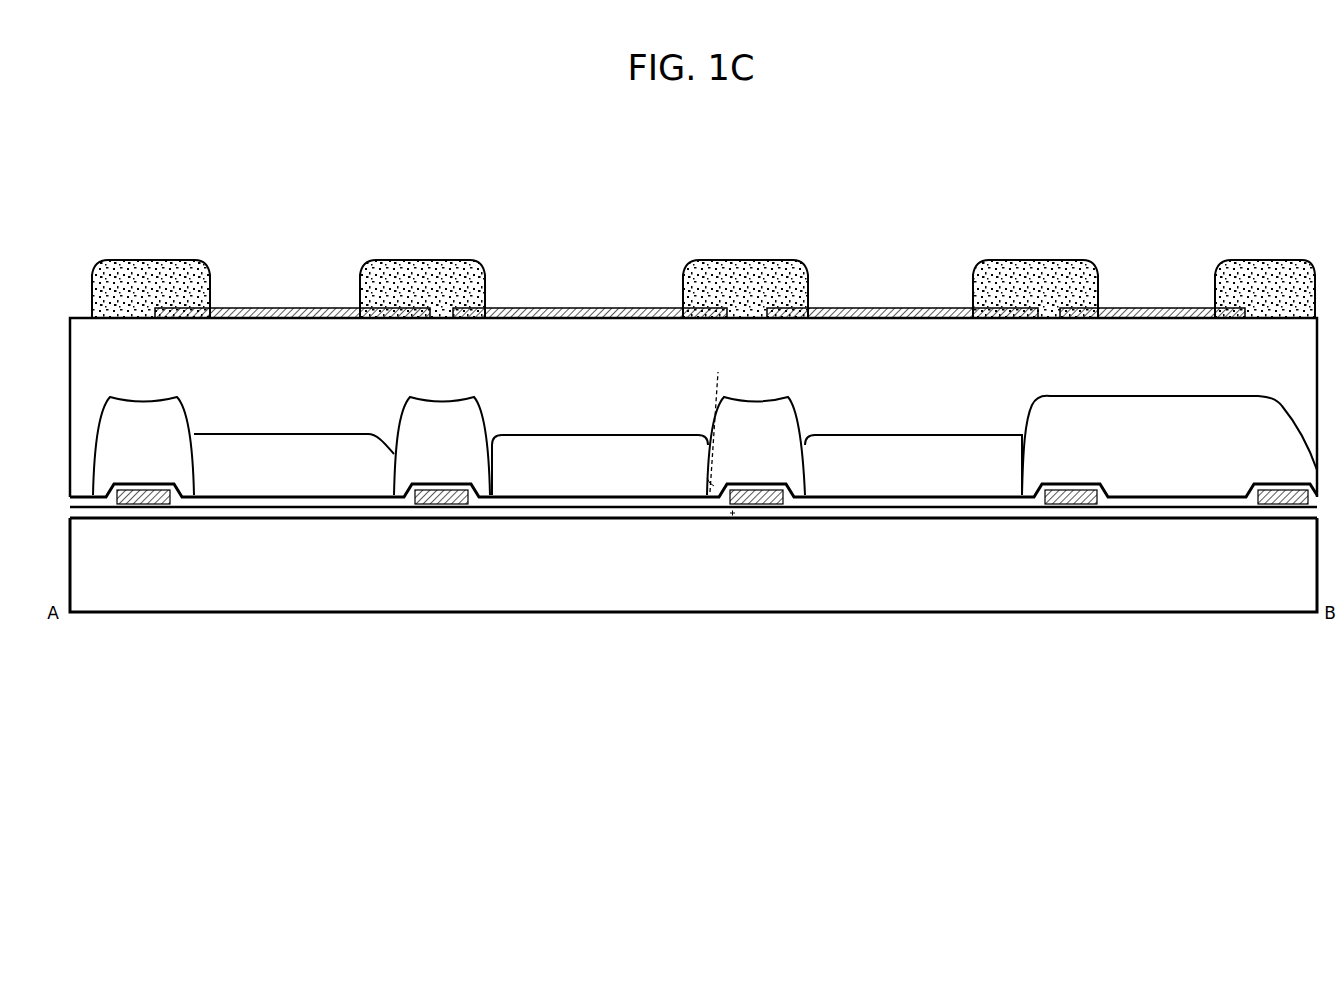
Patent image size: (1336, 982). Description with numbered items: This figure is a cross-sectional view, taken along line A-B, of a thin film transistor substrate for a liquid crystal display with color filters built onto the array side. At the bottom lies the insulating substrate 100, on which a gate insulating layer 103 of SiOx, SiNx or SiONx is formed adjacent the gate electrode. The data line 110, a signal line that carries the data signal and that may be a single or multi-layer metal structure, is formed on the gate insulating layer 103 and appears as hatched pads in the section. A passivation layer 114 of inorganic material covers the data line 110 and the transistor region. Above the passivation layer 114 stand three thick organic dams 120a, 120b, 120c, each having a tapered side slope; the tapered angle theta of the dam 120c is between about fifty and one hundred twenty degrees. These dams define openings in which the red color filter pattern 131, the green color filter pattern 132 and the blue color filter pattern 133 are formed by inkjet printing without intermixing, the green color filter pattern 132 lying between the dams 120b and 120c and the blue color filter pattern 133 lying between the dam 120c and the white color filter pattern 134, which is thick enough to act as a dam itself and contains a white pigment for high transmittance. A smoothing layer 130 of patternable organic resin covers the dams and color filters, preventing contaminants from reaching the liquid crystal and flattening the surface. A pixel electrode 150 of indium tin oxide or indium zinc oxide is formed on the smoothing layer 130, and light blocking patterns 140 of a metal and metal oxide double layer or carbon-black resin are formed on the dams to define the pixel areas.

The insulating substrate 100 is at (358, 580).
The gate insulating layer 103 is at (870, 510).
The data line 110 is at (444, 506).
The passivation layer 114 is at (825, 500).
The dam 120a is at (147, 422).
The dam 120b is at (445, 420).
The dam 120c is at (752, 420).
The smoothing layer 130 is at (295, 362).
The red color filter pattern 131 is at (278, 486).
The green color filter pattern 132 is at (596, 486).
The blue color filter pattern 133 is at (930, 484).
The white color filter pattern 134 is at (1182, 484).
The light blocking pattern 140 is at (408, 276).
The pixel electrode 150 is at (914, 305).